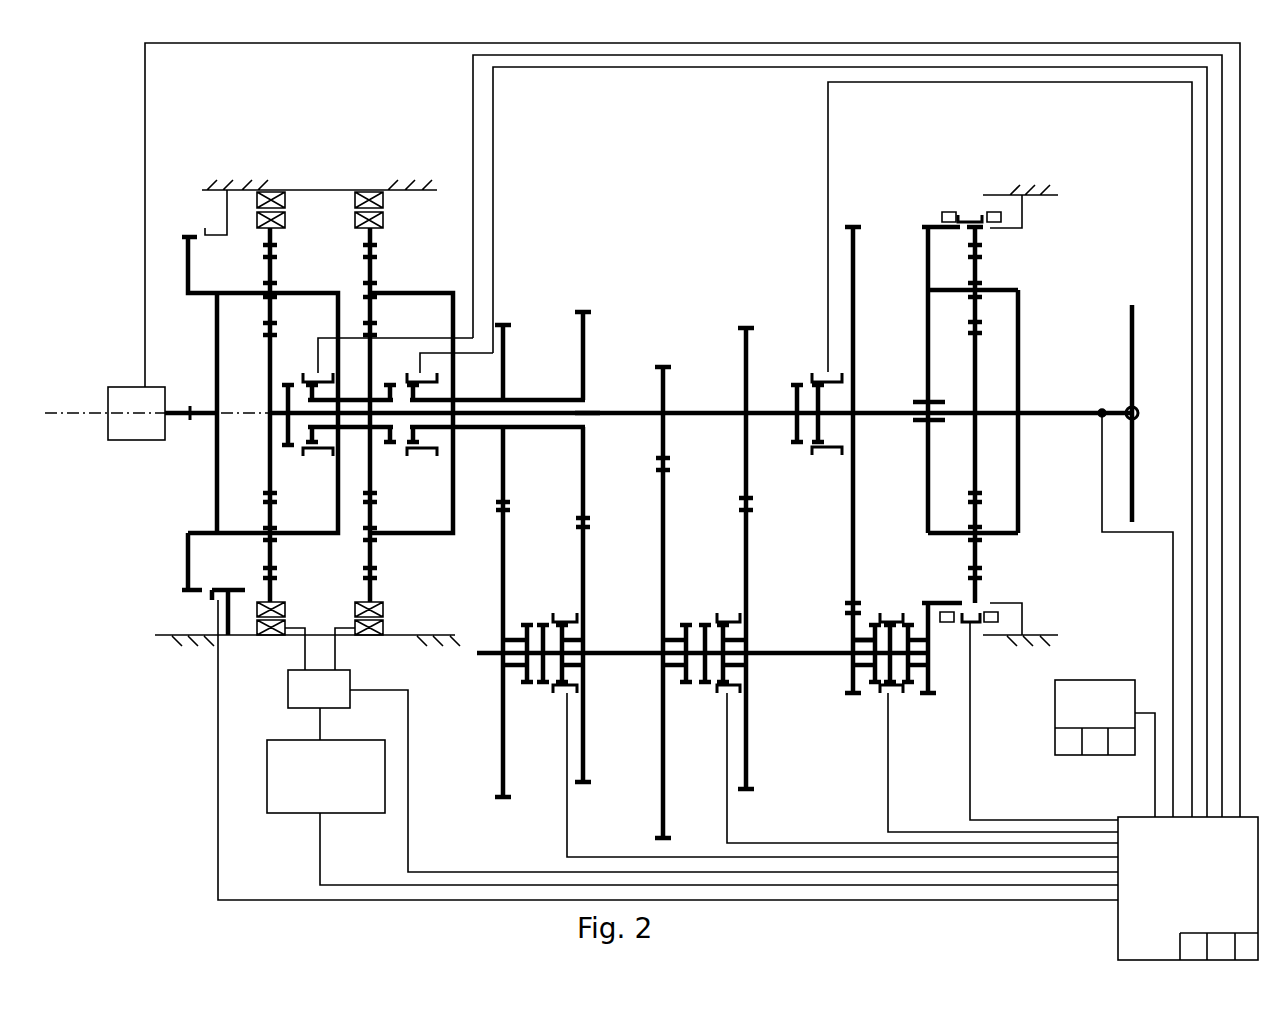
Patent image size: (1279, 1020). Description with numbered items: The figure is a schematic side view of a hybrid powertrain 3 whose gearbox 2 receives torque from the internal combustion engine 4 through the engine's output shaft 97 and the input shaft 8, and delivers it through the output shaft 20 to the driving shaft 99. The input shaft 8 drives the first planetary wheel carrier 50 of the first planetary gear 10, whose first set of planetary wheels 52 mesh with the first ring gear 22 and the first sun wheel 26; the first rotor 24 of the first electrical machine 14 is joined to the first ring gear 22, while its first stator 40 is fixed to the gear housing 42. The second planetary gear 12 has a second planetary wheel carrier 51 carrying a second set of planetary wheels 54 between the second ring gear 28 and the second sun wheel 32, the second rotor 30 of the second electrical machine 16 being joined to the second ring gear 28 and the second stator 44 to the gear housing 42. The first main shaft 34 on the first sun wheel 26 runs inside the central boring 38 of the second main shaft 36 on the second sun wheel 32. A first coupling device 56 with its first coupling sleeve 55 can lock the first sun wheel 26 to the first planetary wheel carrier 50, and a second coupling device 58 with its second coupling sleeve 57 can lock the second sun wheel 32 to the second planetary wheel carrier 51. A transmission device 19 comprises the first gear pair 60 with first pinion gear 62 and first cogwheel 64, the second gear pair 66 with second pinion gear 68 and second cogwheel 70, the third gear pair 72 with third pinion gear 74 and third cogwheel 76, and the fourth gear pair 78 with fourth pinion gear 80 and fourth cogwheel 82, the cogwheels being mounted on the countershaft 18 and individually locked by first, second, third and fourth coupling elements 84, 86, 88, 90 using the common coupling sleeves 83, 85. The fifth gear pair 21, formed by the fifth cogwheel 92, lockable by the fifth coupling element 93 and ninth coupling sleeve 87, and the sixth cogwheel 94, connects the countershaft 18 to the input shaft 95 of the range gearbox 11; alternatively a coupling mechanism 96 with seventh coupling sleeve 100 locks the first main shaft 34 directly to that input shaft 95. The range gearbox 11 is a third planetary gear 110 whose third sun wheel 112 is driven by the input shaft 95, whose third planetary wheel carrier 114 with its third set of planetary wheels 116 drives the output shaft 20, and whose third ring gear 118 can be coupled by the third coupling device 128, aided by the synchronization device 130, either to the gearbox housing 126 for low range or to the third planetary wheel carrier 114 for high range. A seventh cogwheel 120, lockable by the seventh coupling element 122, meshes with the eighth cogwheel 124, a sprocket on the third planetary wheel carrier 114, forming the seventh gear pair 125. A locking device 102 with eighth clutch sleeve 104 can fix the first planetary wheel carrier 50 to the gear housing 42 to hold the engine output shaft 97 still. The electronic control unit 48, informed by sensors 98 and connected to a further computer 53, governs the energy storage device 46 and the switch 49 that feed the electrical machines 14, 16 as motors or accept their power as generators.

The gearbox 2 is at (198, 773).
The hybrid powertrain 3 is at (198, 710).
The internal combustion engine 4 is at (112, 385).
The input shaft 8 is at (206, 407).
The first planetary gear 10 is at (133, 244).
The range gearbox 11 is at (882, 175).
The second planetary gear 12 is at (497, 232).
The first electrical machine 14 is at (132, 169).
The second electrical machine 16 is at (440, 214).
The countershaft 18 is at (643, 655).
The transmission device 19 is at (660, 250).
The output shaft 20 is at (1083, 412).
The fifth gear pair 21 is at (833, 588).
The first ring gear 22 is at (262, 252).
The first rotor 24 is at (257, 197).
The first sun wheel 26 is at (268, 440).
The second ring gear 28 is at (378, 252).
The second rotor 30 is at (357, 215).
The second sun wheel 32 is at (362, 375).
The first main shaft 34 is at (715, 411).
The second main shaft 36 is at (492, 430).
The central boring 38 is at (577, 413).
The first stator 40 is at (245, 188).
The gear housing 42 is at (345, 189).
The second stator 44 is at (390, 189).
The energy storage device 46 is at (267, 790).
The electronic control unit 48 is at (1120, 817).
The switch 49 is at (290, 708).
The first planetary wheel carrier 50 is at (238, 300).
The second planetary wheel carrier 51 is at (455, 505).
The first set of planetary wheels 52 is at (277, 330).
The computer 53 is at (1100, 680).
The second set of planetary wheels 54 is at (378, 330).
The first coupling sleeve 55 is at (305, 455).
The first coupling device 56 is at (287, 383).
The second coupling sleeve 57 is at (415, 455).
The second coupling device 58 is at (437, 384).
The first gear pair 60 is at (660, 340).
The first pinion gear 62 is at (668, 448).
The first cogwheel 64 is at (665, 520).
The second gear pair 66 is at (583, 293).
The second pinion gear 68 is at (590, 455).
The second cogwheel 70 is at (590, 555).
The third gear pair 72 is at (747, 300).
The third pinion gear 74 is at (750, 443).
The third cogwheel 76 is at (750, 570).
The fourth gear pair 78 is at (505, 305).
The fourth pinion gear 80 is at (505, 450).
The fourth cogwheel 82 is at (505, 595).
The fifth coupling sleeve 83 is at (723, 620).
The first coupling element 84 is at (686, 683).
The sixth coupling sleeve 85 is at (560, 620).
The second coupling element 86 is at (575, 688).
The ninth coupling sleeve 87 is at (895, 600).
The third coupling element 88 is at (730, 675).
The fourth coupling element 90 is at (525, 683).
The fifth cogwheel 92 is at (855, 622).
The fifth coupling element 93 is at (875, 695).
The sixth cogwheel 94 is at (850, 545).
The input shaft of the range gearbox 95 is at (888, 410).
The coupling mechanism 96 is at (790, 340).
The output shaft of the internal combustion engine 97 is at (182, 420).
The sensors 98 is at (1103, 408).
The driving shaft 99 is at (1135, 357).
The seventh coupling sleeve 100 is at (830, 455).
The locking device 102 is at (188, 588).
The eighth clutch sleeve 104 is at (212, 600).
The third planetary gear 110 is at (1075, 225).
The third sun wheel 112 is at (978, 465).
The third planetary wheel carrier 114 is at (985, 535).
The third set of planetary wheels 116 is at (980, 315).
The third ring gear 118 is at (968, 235).
The seventh cogwheel 120 is at (930, 690).
The seventh coupling element 122 is at (915, 690).
The eighth cogwheel 124 is at (926, 225).
The seventh gear pair 125 is at (943, 627).
The gearbox housing 126 is at (1040, 195).
The third coupling device 128 is at (965, 212).
The synchronization device 130 is at (947, 210).